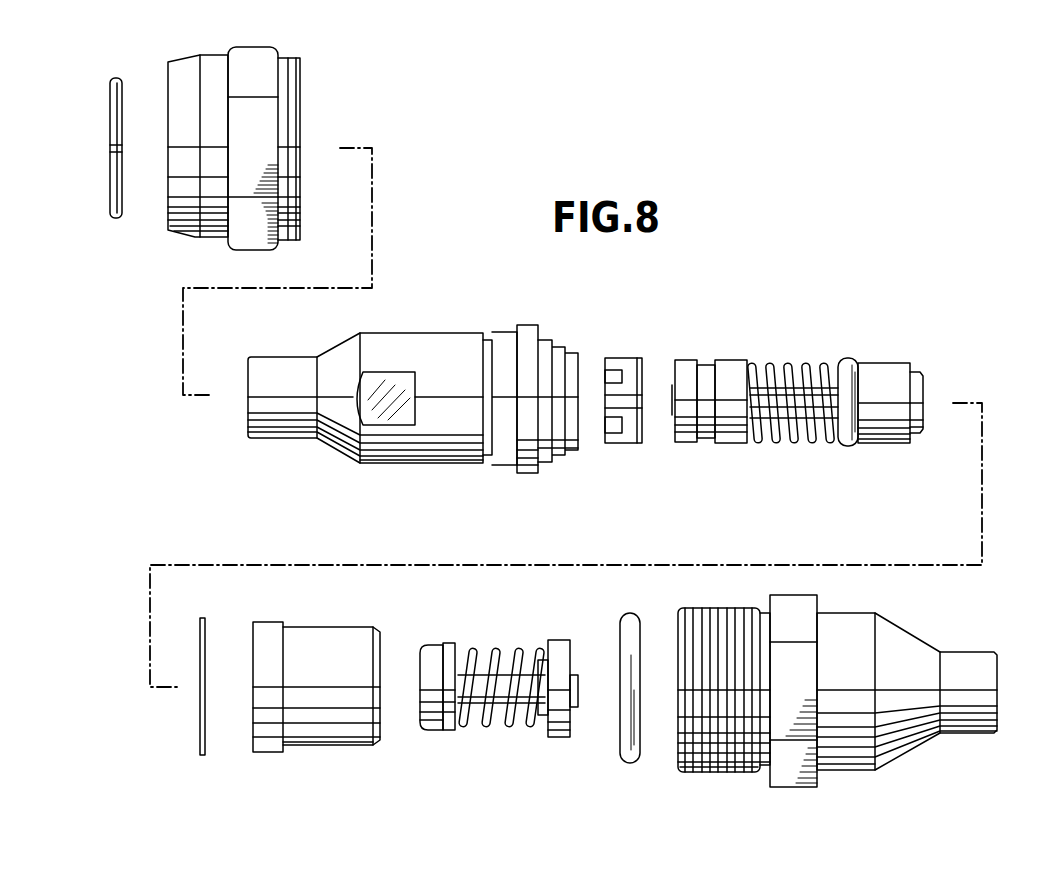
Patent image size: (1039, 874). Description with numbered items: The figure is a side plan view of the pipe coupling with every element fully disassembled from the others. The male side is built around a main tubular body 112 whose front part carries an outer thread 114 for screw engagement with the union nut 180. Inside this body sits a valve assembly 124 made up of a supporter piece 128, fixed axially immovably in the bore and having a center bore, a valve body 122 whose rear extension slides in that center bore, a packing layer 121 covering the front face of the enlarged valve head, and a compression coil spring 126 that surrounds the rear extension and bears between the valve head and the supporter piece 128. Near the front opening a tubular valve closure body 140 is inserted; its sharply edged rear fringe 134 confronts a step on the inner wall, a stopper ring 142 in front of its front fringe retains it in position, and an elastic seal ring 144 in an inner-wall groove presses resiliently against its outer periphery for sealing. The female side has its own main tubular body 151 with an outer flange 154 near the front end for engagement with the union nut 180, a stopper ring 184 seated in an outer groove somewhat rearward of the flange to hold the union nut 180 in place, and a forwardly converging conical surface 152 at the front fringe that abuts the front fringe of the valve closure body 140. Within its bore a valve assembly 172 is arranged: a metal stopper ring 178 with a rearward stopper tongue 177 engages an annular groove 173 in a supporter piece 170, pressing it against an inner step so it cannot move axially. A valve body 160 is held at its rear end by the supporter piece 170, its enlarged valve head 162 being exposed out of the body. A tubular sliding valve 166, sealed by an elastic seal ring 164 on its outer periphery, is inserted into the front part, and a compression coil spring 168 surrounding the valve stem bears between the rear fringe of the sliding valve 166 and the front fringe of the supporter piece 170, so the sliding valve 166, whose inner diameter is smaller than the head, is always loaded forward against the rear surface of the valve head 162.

The main tubular body 112 is at (847, 768).
The outer thread 114 is at (712, 772).
The packing layer 121 is at (433, 731).
The valve body 122 is at (451, 732).
The valve assembly 124 is at (496, 687).
The compression coil spring 126 is at (518, 729).
The supporter piece 128 is at (560, 738).
The rear fringe 134 is at (376, 746).
The valve closure body 140 is at (320, 738).
The stopper ring 142 is at (205, 746).
The elastic seal ring 144 is at (627, 764).
The main tubular body 151 is at (408, 456).
The conical surface 152 is at (564, 458).
The outer flange 154 is at (518, 473).
The valve body 160 is at (797, 438).
The valve head 162 is at (923, 424).
The elastic seal ring 164 is at (848, 447).
The sliding valve 166 is at (888, 434).
The compression coil spring 168 is at (757, 438).
The supporter piece 170 is at (688, 443).
The valve assembly 172 is at (788, 407).
The annular groove 173 is at (701, 444).
The stopper tongue 177 is at (613, 444).
The metal stopper ring 178 is at (634, 432).
The union nut 180 is at (358, 53).
The stopper ring 184 is at (111, 108).